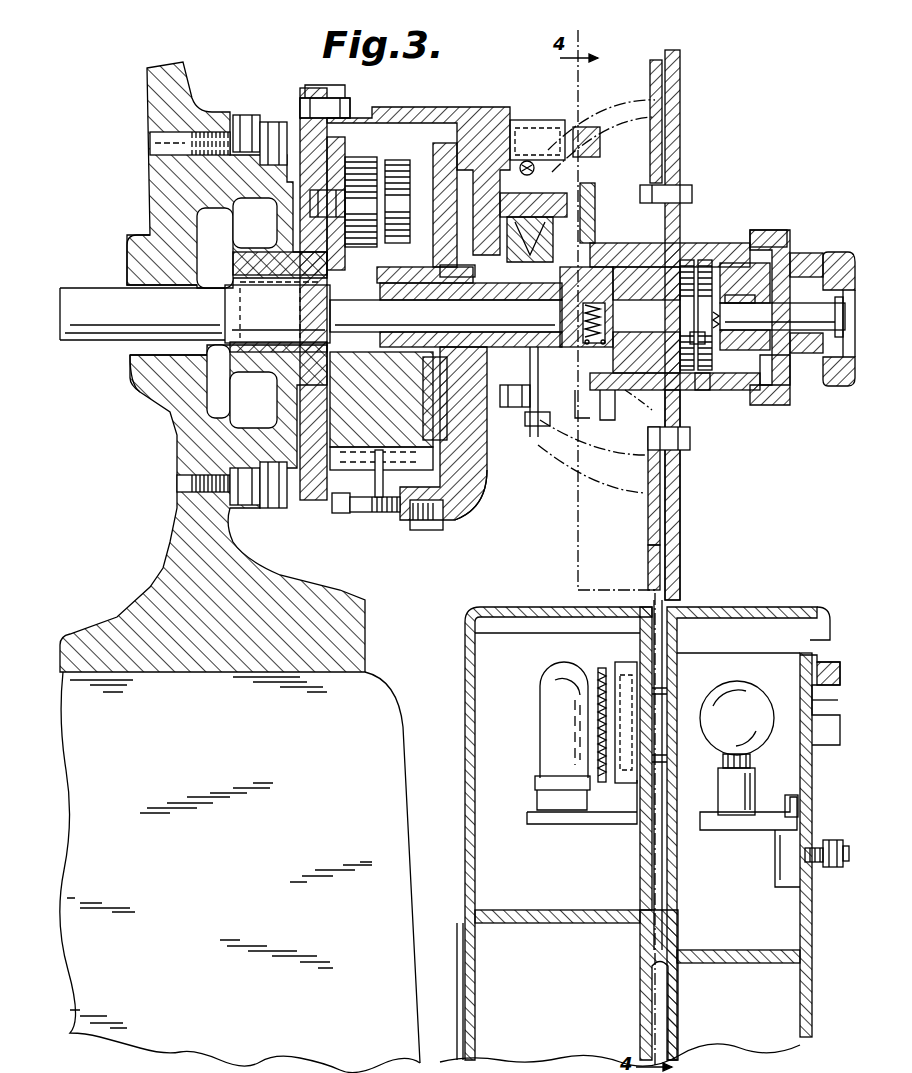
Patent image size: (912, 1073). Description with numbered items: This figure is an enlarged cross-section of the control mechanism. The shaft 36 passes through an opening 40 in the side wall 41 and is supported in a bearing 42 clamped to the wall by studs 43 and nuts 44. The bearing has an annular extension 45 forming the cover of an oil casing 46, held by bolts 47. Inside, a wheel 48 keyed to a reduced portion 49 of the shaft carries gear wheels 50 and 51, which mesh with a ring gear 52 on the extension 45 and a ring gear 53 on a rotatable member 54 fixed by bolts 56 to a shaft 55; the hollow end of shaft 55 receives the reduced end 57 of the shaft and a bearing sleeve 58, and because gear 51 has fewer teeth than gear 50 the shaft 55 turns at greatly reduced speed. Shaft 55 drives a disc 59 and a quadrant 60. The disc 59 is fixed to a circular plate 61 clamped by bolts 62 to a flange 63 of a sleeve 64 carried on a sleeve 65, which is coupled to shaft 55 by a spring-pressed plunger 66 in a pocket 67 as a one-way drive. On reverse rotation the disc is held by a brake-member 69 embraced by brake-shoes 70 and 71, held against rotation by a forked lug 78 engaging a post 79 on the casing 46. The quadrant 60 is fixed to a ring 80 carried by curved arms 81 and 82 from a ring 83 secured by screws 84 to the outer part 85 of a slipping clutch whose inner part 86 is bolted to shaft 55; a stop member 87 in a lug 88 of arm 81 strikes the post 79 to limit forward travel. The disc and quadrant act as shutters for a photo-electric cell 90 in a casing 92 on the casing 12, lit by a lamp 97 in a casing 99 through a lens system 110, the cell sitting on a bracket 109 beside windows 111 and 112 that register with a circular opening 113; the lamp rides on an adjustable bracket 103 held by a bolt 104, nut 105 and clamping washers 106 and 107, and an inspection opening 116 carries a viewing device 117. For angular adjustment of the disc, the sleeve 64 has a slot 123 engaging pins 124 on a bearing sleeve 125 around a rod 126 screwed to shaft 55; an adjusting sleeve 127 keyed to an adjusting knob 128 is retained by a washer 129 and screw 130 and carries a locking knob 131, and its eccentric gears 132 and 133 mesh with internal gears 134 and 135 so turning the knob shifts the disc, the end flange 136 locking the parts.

The casing 12 is at (372, 710).
The shaft 36 is at (95, 300).
The opening 40 is at (140, 350).
The side wall 41 is at (175, 421).
The bearing 42 is at (270, 375).
The studs 43 is at (240, 115).
The nuts 44 is at (272, 122).
The annular extension 45 is at (312, 478).
The oil casing 46 is at (470, 107).
The bolts 47 is at (340, 512).
The wheel 48 is at (355, 428).
The reduced portion 49 is at (330, 312).
The gear wheel 50 is at (358, 157).
The gear wheel 51 is at (395, 160).
The ring gear 52 is at (378, 497).
The ring gear 53 is at (400, 520).
The rotatable member 54 is at (478, 490).
The shaft 55 is at (461, 373).
The bolts 56 is at (480, 335).
The reduced end 57 is at (457, 265).
The bearing sleeve 58 is at (452, 283).
The disc 59 is at (667, 50).
The quadrant 60 is at (652, 573).
The circular plate 61 is at (678, 517).
The bolts 62 is at (680, 443).
The flange 63 is at (652, 410).
The sleeve 64 is at (615, 390).
The sleeve 65 is at (605, 280).
The spring-pressed plunger 66 is at (600, 250).
The pocket 67 is at (700, 390).
The brake-member 69 is at (612, 395).
The brake-shoe 70 is at (600, 225).
The brake-shoe 71 is at (597, 418).
The forked lug 78 is at (597, 195).
The post 79 is at (525, 122).
The ring 80 is at (650, 543).
The curved arm 81 is at (598, 112).
The curved arm 82 is at (572, 475).
The ring 83 is at (585, 300).
The screws 84 is at (533, 437).
The outer part of slipping clutch 85 is at (528, 425).
The inner part of slipping clutch 86 is at (512, 400).
The stop member 87 is at (531, 160).
The lug 88 is at (528, 125).
The photo-electric cell 90 is at (540, 690).
The casing 92 is at (462, 680).
The electric lamp 97 is at (752, 692).
The casing 99 is at (808, 965).
The adjustable bracket 103 is at (755, 830).
The bolt 104 is at (848, 866).
The nut 105 is at (808, 933).
The clamping washer 106 is at (838, 840).
The clamping washer 107 is at (797, 817).
The bracket 109 is at (578, 824).
The lens system 110 is at (600, 680).
The window 111 is at (662, 700).
The window 112 is at (660, 760).
The circular opening 113 is at (745, 695).
The inspection opening 116 is at (807, 700).
The viewing device 117 is at (800, 750).
The slot 123 is at (742, 263).
The pins 124 is at (767, 240).
The bearing sleeve 125 is at (748, 393).
The rod 126 is at (805, 355).
The adjusting sleeve 127 is at (785, 400).
The adjusting knob 128 is at (795, 250).
The washer 129 is at (835, 310).
The screw 130 is at (848, 256).
The locking knob 131 is at (838, 300).
The gear 132 is at (706, 262).
The gear 133 is at (688, 262).
The internal gear 134 is at (722, 385).
The internal gear 135 is at (712, 388).
The end flange 136 is at (788, 245).